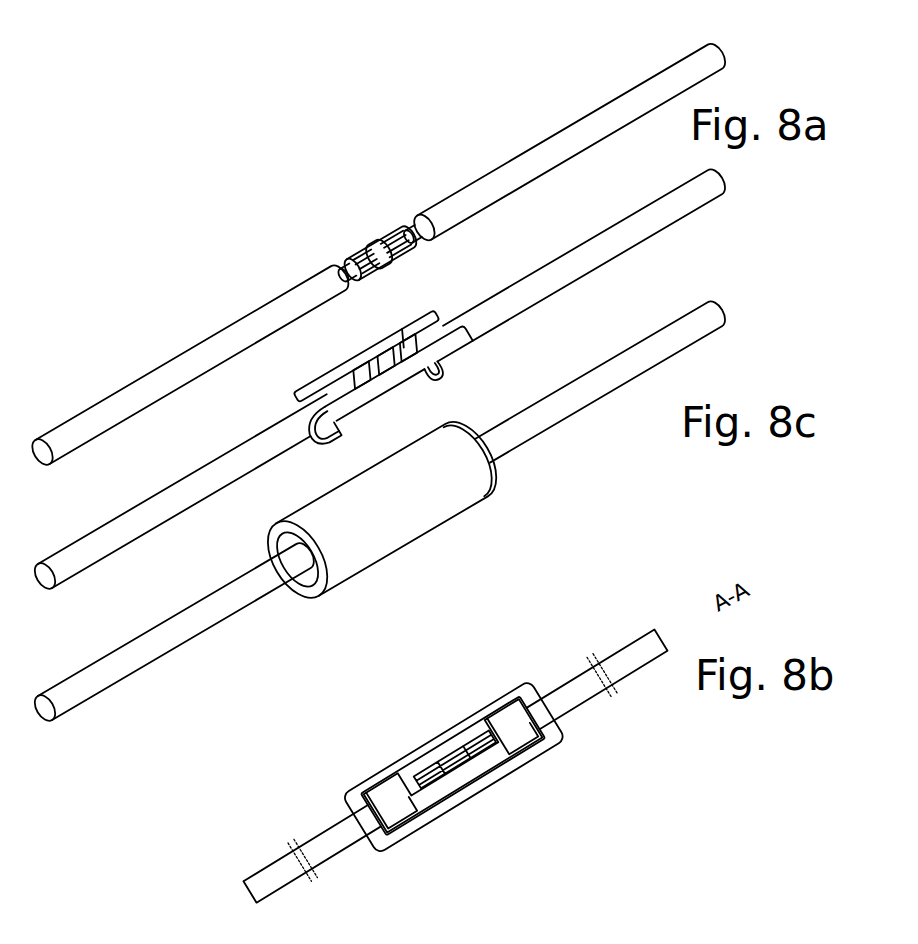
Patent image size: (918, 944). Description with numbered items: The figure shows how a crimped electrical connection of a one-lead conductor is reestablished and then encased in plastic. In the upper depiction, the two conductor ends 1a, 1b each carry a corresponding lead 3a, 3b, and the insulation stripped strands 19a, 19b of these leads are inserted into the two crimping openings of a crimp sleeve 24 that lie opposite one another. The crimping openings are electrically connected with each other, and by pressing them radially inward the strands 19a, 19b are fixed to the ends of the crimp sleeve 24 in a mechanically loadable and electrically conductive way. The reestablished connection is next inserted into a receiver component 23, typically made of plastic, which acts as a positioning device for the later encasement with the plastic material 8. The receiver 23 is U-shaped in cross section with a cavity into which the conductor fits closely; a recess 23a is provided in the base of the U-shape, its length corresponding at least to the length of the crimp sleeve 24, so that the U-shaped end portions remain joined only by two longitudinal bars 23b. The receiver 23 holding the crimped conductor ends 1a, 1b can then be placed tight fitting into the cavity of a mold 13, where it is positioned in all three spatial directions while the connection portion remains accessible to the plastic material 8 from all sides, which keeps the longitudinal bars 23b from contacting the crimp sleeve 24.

In FIG. 8A, the conductor end 1a is at (240, 327).
In FIG. 8C, the conductor end 1a is at (242, 592).
In FIG. 8B, the conductor end 1a is at (282, 877).
In FIG. 8A, the conductor end 1b is at (552, 278).
In FIG. 8C, the conductor end 1b is at (528, 428).
In FIG. 8B, the conductor end 1b is at (630, 662).
In FIG. 8A, the lead 3a is at (226, 408).
In FIG. 8A, the lead 3b is at (525, 200).
In FIG. 8C, the plastic material 8 is at (431, 495).
In FIG. 8B, the plastic material 8 is at (416, 789).
In FIG. 8B, the mold 13 is at (427, 825).
In FIG. 8A, the insulation stripped strand 19a is at (348, 279).
In FIG. 8A, the insulation stripped strand 19b is at (408, 222).
In FIG. 8A, the receiver component 23 is at (394, 372).
In FIG. 8A, the recess 23a is at (378, 402).
In FIG. 8A, the longitudinal bars 23b is at (377, 350).
In FIG. 8A, the crimp sleeve 24 is at (383, 245).
In FIG. 8B, the crimp sleeve 24 is at (505, 715).